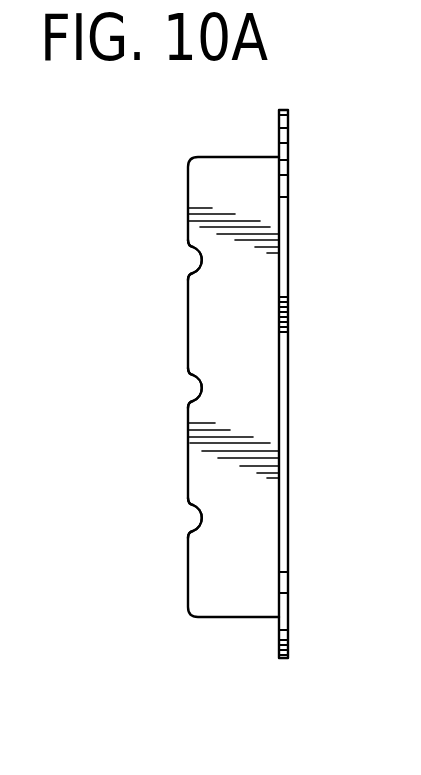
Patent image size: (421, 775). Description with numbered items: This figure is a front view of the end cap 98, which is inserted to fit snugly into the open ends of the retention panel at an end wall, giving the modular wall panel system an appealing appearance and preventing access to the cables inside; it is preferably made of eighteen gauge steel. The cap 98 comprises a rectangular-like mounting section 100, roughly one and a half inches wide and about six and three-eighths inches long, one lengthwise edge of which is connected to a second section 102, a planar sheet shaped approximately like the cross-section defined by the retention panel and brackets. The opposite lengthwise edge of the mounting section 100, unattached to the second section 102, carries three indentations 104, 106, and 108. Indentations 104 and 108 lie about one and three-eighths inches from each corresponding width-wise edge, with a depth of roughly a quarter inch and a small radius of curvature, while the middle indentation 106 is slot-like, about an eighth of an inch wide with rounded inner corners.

The mounting section 100 is at (231, 156).
The second section 102 is at (289, 138).
The indentation 104 is at (195, 258).
The indentation 106 is at (202, 377).
The indentation 108 is at (203, 515).
The end cap 98 is at (300, 722).